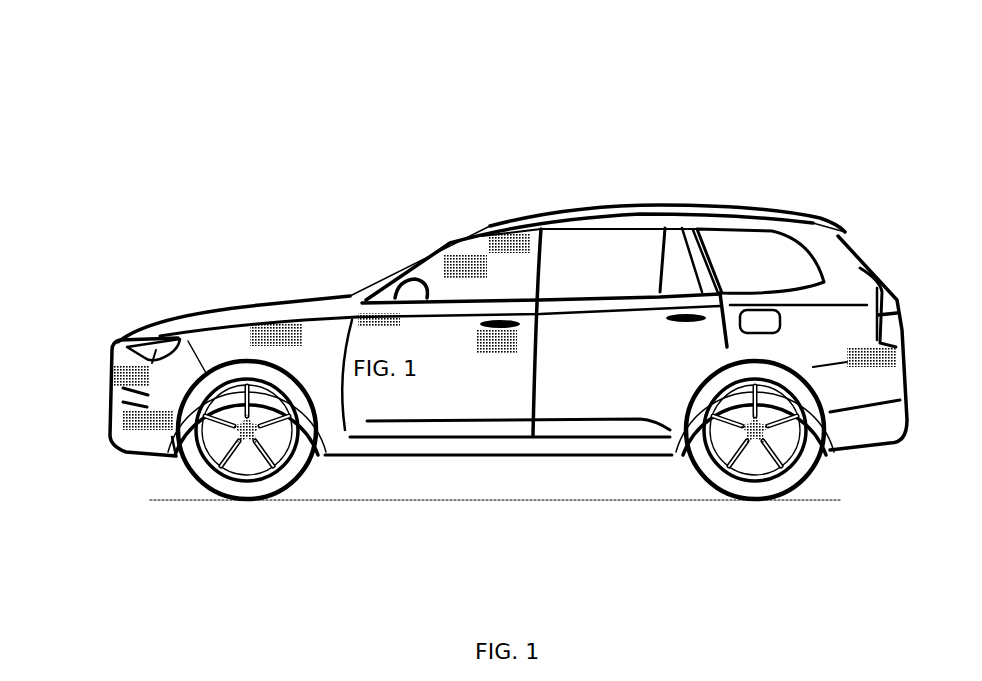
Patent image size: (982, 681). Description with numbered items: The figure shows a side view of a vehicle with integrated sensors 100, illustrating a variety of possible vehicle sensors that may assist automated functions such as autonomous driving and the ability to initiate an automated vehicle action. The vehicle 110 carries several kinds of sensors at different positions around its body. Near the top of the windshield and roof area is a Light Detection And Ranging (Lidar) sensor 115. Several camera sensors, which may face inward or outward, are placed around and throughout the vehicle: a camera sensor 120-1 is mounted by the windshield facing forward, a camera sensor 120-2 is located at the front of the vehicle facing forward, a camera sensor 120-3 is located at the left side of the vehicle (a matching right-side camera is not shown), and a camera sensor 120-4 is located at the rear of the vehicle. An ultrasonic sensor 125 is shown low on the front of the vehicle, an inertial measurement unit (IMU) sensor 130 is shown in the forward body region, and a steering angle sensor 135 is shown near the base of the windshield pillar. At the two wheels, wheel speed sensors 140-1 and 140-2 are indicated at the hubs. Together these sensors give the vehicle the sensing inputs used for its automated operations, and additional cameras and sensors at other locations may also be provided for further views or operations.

The vehicle with integrated sensors 100 is at (921, 25).
The vehicle 110 is at (818, 220).
The Light Detection And Ranging (Lidar) sensor 115 is at (483, 240).
The camera sensor 120-1 is at (440, 265).
The camera sensor 120-2 is at (110, 368).
The camera sensor 120-3 is at (520, 345).
The camera sensor 120-4 is at (900, 364).
The ultrasonic sensor 125 is at (120, 418).
The inertial measurement unit (IMU) sensor 130 is at (248, 333).
The steering angle sensor 135 is at (357, 313).
The wheel speed sensor 140-1 is at (267, 443).
The wheel speed sensor 140-2 is at (778, 443).